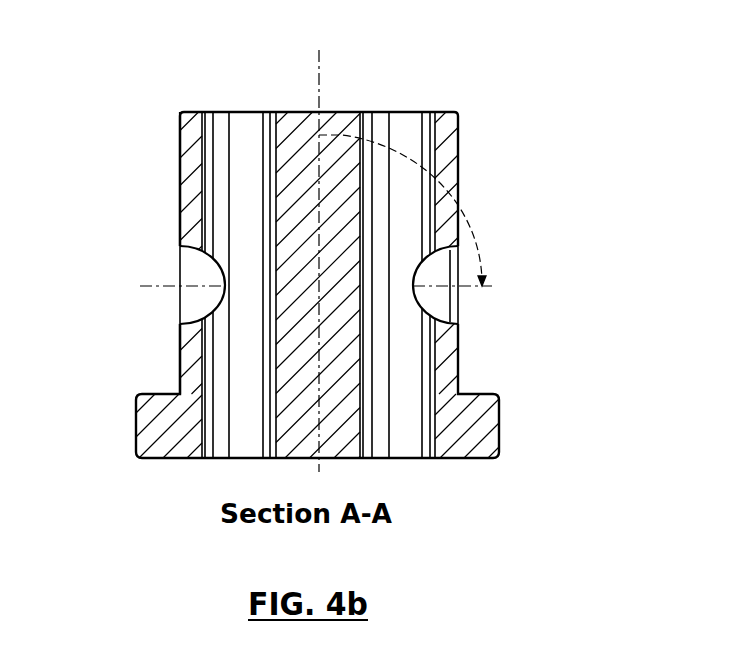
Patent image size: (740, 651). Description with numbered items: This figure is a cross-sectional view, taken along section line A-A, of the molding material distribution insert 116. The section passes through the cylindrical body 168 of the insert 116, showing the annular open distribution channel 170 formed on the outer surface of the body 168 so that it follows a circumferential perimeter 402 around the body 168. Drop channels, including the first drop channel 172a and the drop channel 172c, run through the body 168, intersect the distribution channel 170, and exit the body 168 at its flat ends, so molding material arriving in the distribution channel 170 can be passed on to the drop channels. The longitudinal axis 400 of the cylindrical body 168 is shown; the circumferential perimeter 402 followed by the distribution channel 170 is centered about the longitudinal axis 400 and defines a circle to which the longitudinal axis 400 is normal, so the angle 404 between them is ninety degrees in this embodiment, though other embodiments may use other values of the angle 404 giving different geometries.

The molding material distribution insert 116 is at (583, 126).
The body 168 is at (192, 164).
The distribution channel 170 is at (195, 269).
The first drop channel 172a is at (416, 110).
The drop channel 172c is at (232, 110).
The longitudinal axis 400 is at (318, 83).
The circumferential perimeter 402 is at (181, 287).
The angle 404 is at (473, 248).